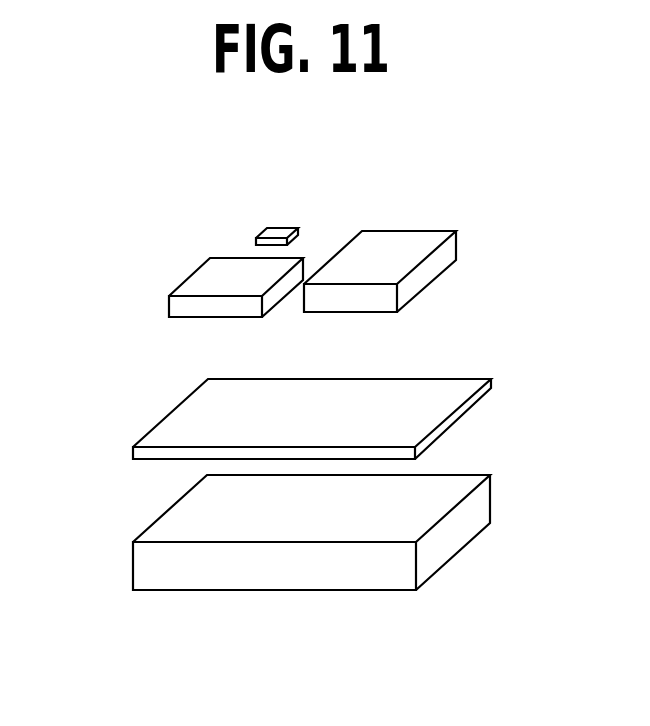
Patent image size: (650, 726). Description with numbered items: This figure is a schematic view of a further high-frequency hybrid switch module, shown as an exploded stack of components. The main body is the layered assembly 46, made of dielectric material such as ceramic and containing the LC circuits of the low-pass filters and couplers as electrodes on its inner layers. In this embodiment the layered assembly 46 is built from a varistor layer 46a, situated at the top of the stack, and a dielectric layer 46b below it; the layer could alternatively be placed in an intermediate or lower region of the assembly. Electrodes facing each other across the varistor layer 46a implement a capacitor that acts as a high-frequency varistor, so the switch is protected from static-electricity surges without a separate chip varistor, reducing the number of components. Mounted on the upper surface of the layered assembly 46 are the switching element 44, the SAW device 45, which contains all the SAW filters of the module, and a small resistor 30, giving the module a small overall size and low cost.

The resistor 30 is at (257, 237).
The switching element 44 is at (213, 277).
The SAW device 45 is at (400, 260).
The layered assembly 46 is at (304, 485).
The varistor layer 46a is at (463, 408).
The dielectric layer 46b is at (462, 525).